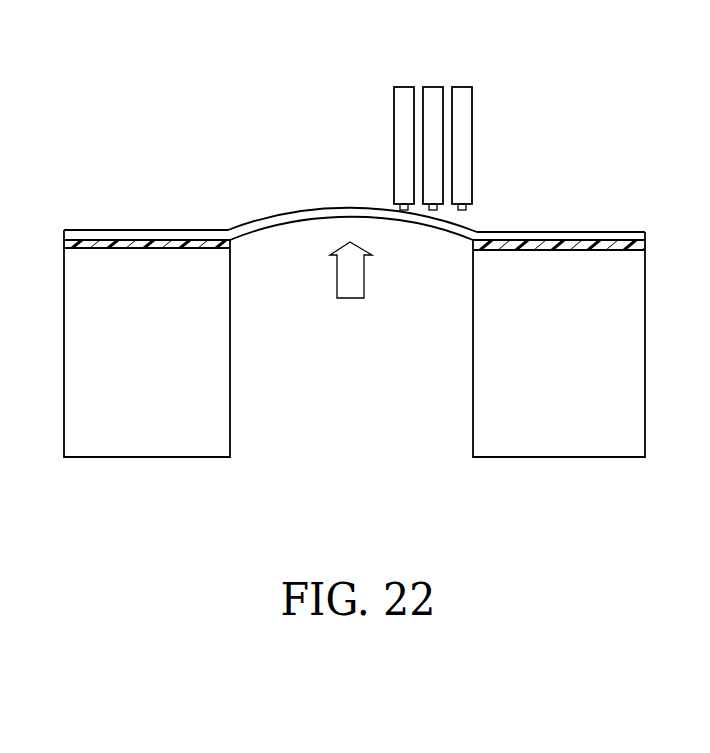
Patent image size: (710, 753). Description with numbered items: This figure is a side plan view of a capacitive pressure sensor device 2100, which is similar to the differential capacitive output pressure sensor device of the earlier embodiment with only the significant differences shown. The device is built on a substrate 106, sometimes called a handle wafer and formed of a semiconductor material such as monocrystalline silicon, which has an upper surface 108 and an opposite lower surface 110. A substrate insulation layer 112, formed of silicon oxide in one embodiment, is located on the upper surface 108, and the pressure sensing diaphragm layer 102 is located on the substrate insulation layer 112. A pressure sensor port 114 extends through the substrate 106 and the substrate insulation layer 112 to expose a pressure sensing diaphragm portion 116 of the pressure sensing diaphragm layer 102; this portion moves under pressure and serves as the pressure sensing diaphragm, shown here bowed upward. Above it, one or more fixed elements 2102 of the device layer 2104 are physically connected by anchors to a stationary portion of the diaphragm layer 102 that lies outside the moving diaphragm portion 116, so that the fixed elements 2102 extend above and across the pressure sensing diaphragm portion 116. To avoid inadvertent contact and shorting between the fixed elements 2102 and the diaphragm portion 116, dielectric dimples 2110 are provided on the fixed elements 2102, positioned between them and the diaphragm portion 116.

The capacitive pressure sensor device 2100 is at (122, 186).
The fixed elements 2102 is at (433, 92).
The device layer 2104 is at (368, 128).
The dielectric dimples 2110 is at (433, 211).
The pressure sensing diaphragm layer 102 is at (656, 232).
The upper surface 108 is at (588, 251).
The substrate insulation layer 112 is at (656, 248).
The pressure sensing diaphragm portion 116 is at (330, 230).
The pressure sensor port 114 is at (292, 388).
The substrate 106 is at (585, 374).
The lower surface 110 is at (583, 457).